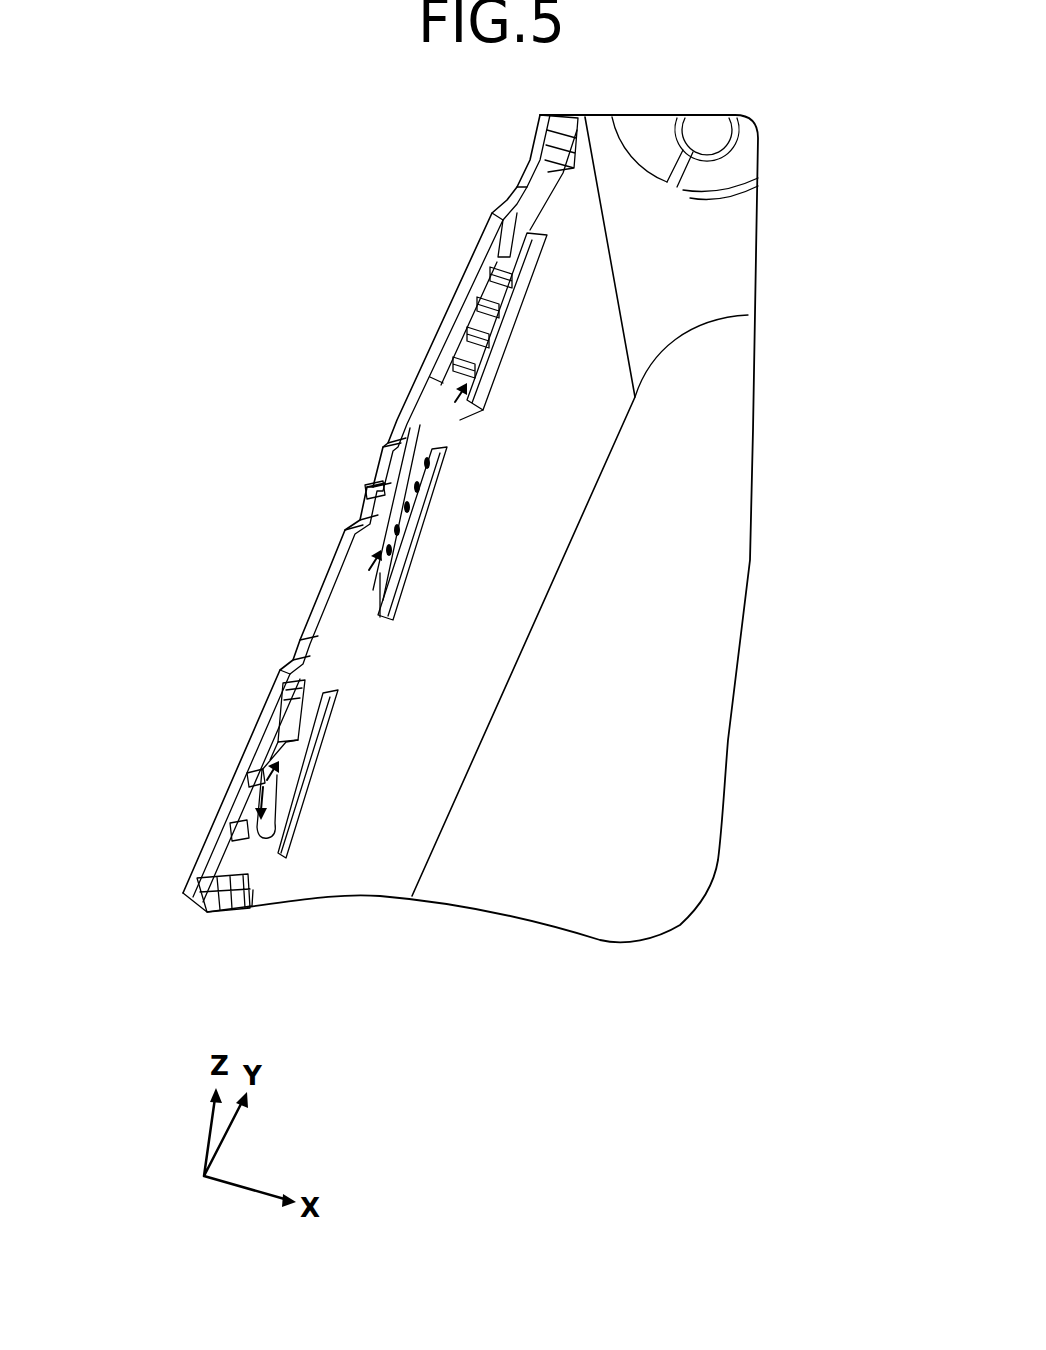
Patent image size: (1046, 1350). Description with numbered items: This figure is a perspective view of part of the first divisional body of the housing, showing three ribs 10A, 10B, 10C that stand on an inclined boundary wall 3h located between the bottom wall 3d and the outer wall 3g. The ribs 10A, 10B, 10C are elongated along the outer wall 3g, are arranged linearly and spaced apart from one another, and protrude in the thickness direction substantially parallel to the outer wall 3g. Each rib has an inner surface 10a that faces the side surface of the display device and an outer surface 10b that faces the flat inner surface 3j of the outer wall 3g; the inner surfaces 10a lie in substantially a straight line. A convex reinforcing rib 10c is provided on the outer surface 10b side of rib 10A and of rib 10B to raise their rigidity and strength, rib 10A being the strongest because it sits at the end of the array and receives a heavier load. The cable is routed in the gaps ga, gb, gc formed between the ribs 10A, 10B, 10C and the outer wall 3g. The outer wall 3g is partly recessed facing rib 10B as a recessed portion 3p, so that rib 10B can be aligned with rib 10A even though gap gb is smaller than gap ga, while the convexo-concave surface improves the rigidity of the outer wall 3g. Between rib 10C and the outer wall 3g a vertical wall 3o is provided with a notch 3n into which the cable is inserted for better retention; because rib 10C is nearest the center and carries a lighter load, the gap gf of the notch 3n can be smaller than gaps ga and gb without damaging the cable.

The bottom wall 3d is at (647, 923).
The inclined boundary wall 3h is at (563, 497).
The inner surface of the outer wall 3j is at (478, 258).
The outer surface 10b is at (490, 272).
The outer wall 3g is at (465, 288).
The convex reinforcing rib 10c is at (475, 312).
The inner surface 10a is at (535, 280).
The rib 10A is at (515, 323).
The rib 10B is at (415, 562).
The rib 10C is at (300, 787).
The recessed portion 3p is at (365, 510).
The vertical wall 3o is at (300, 657).
The notch 3n is at (327, 673).
The gap ga is at (465, 410).
The gap gb is at (378, 575).
The gap gc is at (262, 785).
The gap of the notch gf is at (263, 823).